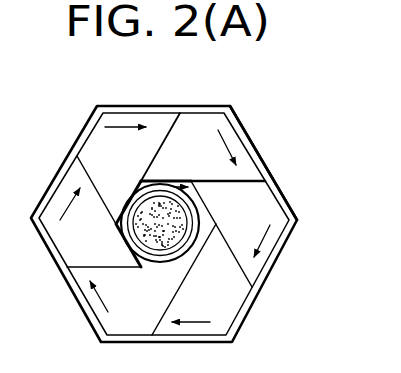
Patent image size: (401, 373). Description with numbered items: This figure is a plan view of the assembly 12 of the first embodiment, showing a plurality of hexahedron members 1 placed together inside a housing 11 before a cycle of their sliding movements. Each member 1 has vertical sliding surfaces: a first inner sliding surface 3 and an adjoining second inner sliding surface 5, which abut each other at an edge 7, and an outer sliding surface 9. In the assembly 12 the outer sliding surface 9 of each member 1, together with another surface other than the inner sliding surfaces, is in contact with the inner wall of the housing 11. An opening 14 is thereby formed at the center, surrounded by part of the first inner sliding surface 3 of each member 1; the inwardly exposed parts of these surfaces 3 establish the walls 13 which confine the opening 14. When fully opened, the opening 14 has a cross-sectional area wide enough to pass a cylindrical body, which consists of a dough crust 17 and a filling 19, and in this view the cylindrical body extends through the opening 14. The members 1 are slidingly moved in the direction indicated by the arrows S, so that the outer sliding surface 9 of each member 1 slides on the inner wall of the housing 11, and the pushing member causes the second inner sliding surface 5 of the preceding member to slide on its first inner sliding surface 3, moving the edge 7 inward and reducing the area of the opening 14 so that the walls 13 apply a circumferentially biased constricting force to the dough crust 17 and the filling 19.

The member 1 is at (109, 152).
The first inner sliding surface 3 is at (163, 138).
The second inner sliding surface 5 is at (84, 174).
The edge 7 is at (113, 224).
The outer sliding surface 9 is at (118, 113).
The housing 11 is at (245, 135).
The assembly 12 is at (284, 272).
The walls 13 is at (172, 184).
The opening 14 is at (207, 265).
The dough crust 17 is at (178, 224).
The filling 19 is at (196, 211).
The arrows s S is at (205, 342).